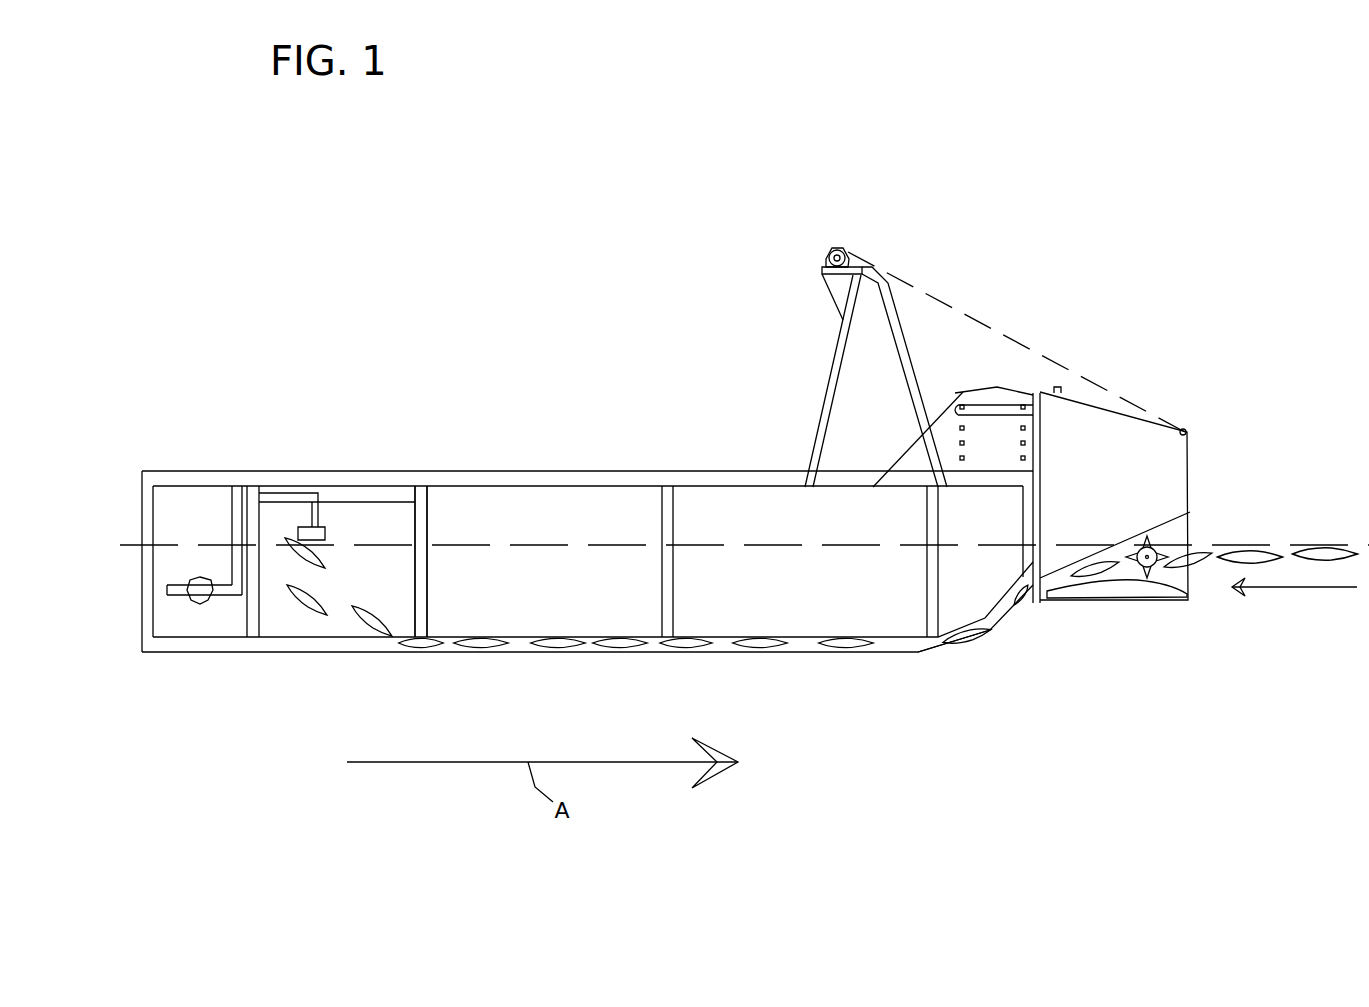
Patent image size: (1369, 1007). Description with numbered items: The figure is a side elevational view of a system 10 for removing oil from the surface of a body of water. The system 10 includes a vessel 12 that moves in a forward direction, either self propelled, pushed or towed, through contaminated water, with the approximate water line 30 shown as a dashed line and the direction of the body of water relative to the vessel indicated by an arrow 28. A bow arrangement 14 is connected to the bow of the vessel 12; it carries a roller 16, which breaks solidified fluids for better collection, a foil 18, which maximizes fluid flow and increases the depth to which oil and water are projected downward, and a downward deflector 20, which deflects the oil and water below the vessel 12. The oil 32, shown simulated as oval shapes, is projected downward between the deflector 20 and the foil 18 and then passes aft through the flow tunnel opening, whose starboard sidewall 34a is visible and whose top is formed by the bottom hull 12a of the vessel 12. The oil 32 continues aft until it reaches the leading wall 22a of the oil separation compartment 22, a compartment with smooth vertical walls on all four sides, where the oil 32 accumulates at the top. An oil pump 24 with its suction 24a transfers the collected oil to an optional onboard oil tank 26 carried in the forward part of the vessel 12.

The system 10 is at (565, 340).
The vessel 12 is at (657, 480).
The bottom hull 12a is at (910, 640).
The bow arrangement 14 is at (1137, 433).
The roller 16 is at (1152, 572).
The foil 18 is at (1103, 588).
The downward deflector 20 is at (1148, 533).
The oil separation compartment 22 is at (368, 502).
The leading wall 22a is at (415, 617).
The oil pump 24 is at (200, 603).
The suction 24a is at (303, 535).
The onboard oil tank 26 is at (205, 532).
The arrow 28 is at (1277, 587).
The water line 30 is at (508, 543).
The oil 32 is at (360, 613).
The starboard sidewall 34a is at (722, 650).